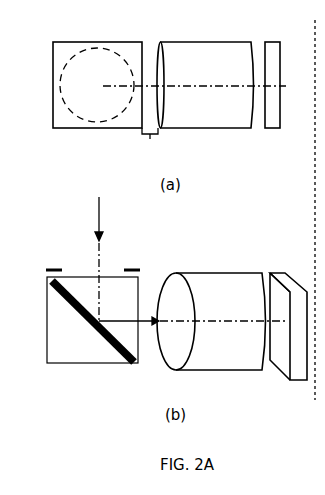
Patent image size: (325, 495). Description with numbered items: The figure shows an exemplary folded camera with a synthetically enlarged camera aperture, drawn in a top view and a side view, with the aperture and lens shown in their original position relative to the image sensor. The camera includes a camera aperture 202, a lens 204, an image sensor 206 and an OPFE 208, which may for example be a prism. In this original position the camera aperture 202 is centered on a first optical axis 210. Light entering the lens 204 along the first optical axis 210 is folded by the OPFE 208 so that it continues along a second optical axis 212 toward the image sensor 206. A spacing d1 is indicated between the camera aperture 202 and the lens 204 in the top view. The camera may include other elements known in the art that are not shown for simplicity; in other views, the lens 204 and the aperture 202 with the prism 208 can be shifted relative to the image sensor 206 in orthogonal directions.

The camera aperture 202 is at (76, 52).
The lens 204 is at (183, 50).
The image sensor 206 is at (272, 50).
The OPFE 208 is at (133, 120).
The first optical axis 210 is at (237, 90).
The second optical axis 212 is at (97, 252).
The distance d1 is at (146, 146).